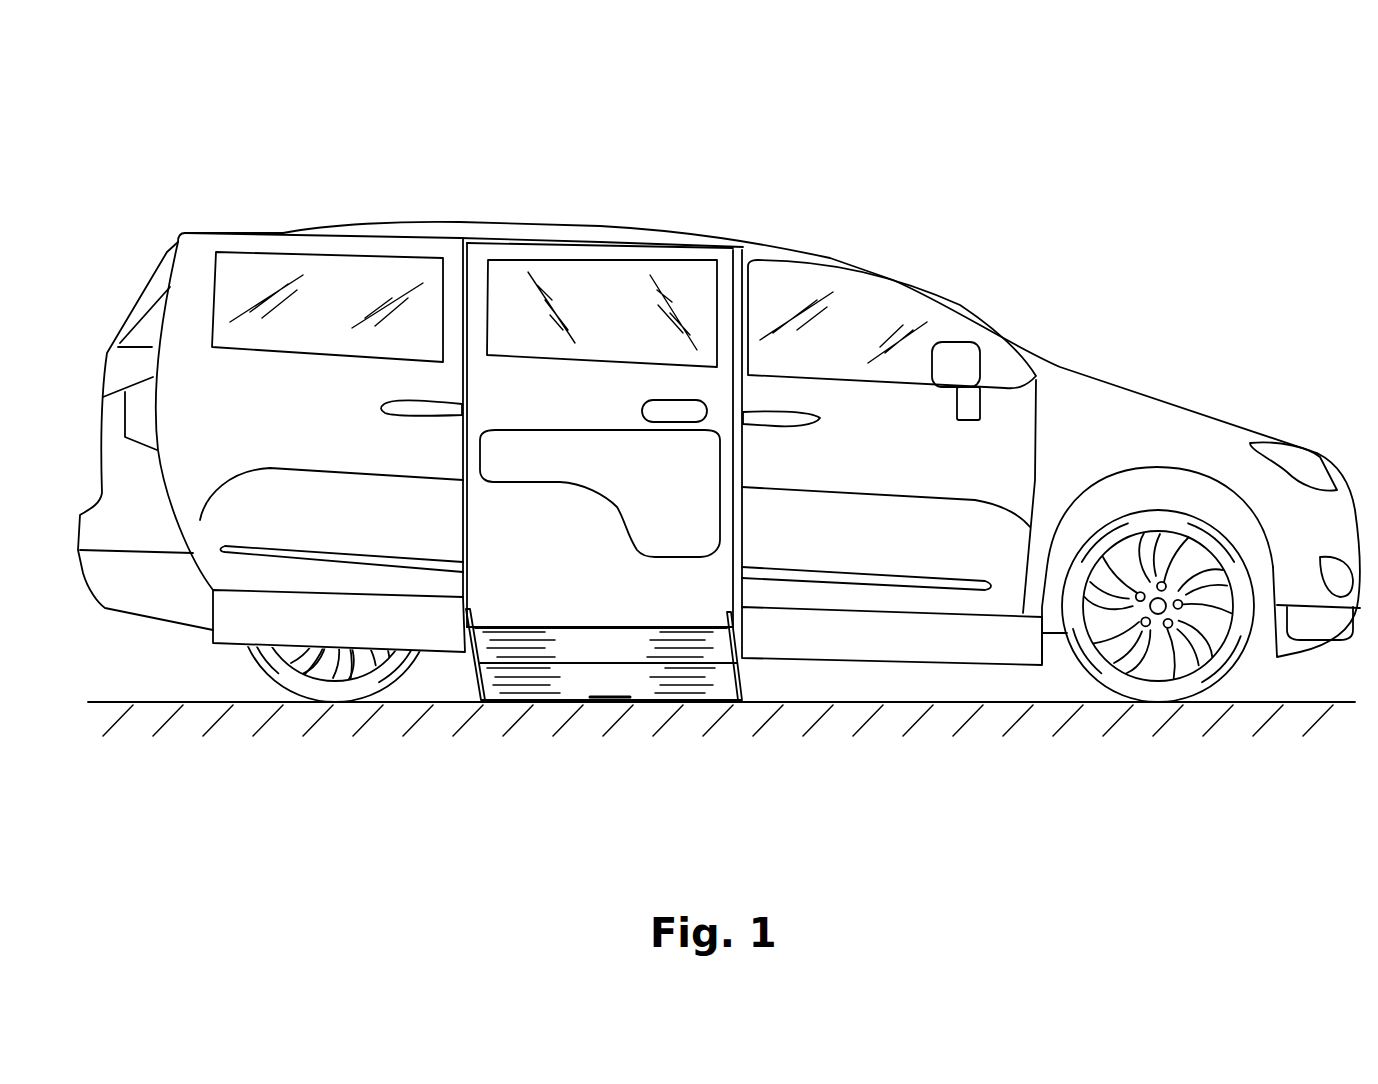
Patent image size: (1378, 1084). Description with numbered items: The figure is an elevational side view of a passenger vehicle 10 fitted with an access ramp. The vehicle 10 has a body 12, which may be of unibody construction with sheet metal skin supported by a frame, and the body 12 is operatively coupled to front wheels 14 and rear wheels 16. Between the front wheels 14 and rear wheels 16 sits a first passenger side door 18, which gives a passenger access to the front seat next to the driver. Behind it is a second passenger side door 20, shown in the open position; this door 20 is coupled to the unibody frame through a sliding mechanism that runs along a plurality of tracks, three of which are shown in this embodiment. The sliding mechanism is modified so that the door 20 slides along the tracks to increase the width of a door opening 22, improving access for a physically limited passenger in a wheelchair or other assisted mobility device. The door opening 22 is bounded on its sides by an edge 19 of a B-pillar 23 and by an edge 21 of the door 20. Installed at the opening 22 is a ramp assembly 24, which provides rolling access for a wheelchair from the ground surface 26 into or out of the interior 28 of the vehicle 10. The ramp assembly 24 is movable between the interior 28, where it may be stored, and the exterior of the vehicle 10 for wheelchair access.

The vehicle 10 is at (998, 153).
The body 12 is at (1165, 413).
The front wheels 14 is at (1145, 690).
The rear wheels 16 is at (343, 690).
The first passenger side door 18 is at (890, 600).
The edge of B-pillar 19 is at (724, 566).
The second passenger side door 20 is at (190, 382).
The edge of door 21 is at (478, 518).
The door opening 22 is at (610, 290).
The B-pillar 23 is at (735, 326).
The ramp assembly 24 is at (643, 683).
The ground surface 26 is at (142, 696).
The interior 28 is at (573, 414).